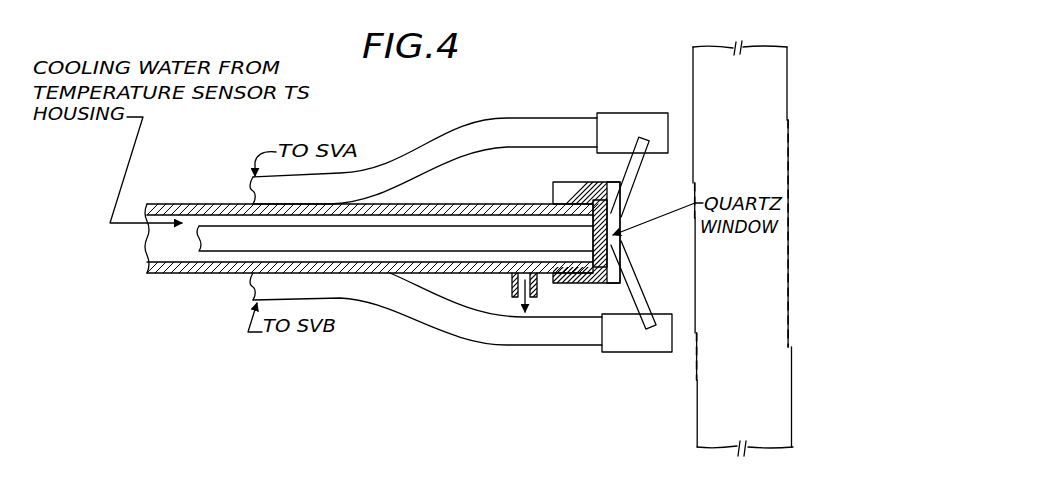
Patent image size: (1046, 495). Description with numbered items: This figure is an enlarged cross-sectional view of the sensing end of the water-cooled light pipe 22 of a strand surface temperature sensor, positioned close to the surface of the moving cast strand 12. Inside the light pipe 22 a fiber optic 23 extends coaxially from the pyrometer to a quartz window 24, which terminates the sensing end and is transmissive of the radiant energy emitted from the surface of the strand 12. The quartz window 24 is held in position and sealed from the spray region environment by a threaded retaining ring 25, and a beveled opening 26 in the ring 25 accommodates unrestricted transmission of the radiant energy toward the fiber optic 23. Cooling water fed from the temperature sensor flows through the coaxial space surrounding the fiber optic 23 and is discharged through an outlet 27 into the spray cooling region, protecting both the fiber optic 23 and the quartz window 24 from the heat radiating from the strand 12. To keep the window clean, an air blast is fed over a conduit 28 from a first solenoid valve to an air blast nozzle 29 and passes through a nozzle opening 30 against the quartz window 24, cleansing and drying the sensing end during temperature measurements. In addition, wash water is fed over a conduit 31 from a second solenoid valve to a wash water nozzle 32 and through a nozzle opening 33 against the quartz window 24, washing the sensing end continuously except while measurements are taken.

The strand 12 is at (768, 47).
The light pipe 22 is at (204, 202).
The fiber optic 23 is at (218, 254).
The quartz window 24 is at (682, 232).
The threaded retaining ring 25 is at (575, 182).
The beveled opening 26 is at (626, 213).
The outlet 27 is at (508, 294).
The conduit 28 is at (452, 171).
The air blast nozzle 29 is at (682, 105).
The nozzle opening 30 is at (642, 164).
The conduit 31 is at (438, 297).
The wash water nozzle 32 is at (680, 341).
The nozzle opening 33 is at (645, 307).